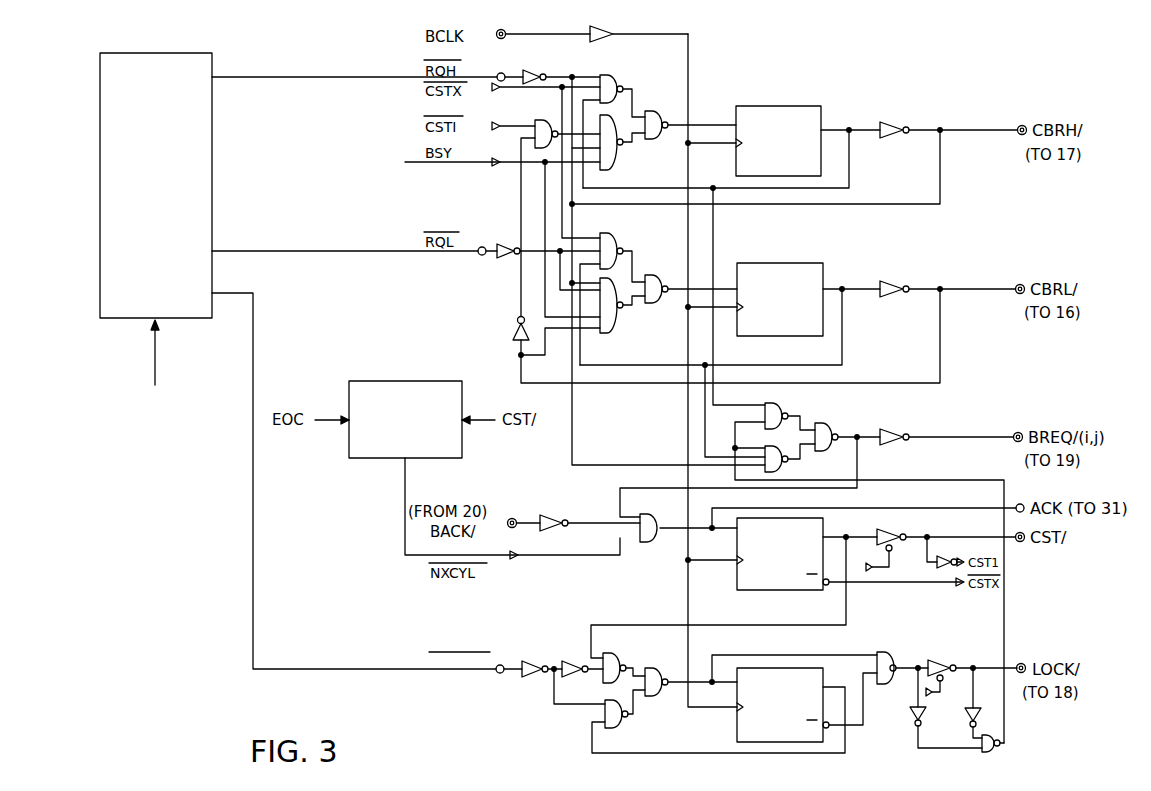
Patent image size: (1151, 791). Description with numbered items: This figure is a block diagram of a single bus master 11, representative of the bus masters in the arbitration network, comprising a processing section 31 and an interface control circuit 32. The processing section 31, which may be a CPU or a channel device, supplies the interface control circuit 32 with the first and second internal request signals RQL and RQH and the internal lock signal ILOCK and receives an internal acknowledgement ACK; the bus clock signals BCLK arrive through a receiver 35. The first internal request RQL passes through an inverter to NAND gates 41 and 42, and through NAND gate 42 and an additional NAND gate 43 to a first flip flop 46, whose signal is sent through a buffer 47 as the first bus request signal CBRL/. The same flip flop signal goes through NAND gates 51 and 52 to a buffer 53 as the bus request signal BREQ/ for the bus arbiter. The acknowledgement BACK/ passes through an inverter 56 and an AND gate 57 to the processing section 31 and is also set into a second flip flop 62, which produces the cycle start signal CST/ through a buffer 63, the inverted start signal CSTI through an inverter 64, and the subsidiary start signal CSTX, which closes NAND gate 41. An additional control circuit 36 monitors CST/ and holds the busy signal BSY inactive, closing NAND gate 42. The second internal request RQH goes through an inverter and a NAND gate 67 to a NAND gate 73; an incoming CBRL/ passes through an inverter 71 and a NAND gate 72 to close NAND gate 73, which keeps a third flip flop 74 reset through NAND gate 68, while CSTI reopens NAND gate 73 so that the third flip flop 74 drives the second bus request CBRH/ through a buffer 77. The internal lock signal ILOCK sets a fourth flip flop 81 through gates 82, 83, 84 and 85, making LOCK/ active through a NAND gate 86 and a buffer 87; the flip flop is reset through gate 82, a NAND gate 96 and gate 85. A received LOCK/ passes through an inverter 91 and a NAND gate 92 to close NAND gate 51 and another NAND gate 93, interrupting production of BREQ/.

The bus master 11 is at (168, 552).
The processing section 31 is at (100, 169).
The interface control circuit 32 is at (542, 716).
The receiver 35 is at (605, 27).
The additional control circuit 36 is at (372, 380).
The NAND gate 41 is at (615, 238).
The NAND gate 42 is at (618, 324).
The additional NAND gate 43 is at (655, 276).
The first flip flop 46 is at (774, 262).
The buffer 47 is at (896, 281).
The NAND gate 51 is at (780, 468).
The NAND gate 52 is at (826, 423).
The buffer 53 is at (899, 429).
The inverter 56 is at (549, 511).
The AND gate 57 is at (650, 514).
The second flip flop 62 is at (736, 588).
The buffer 63 is at (901, 532).
The inverter 64 is at (953, 558).
The NAND gate 67 is at (614, 77).
The NAND gate 68 is at (656, 111).
The inverter 71 is at (512, 327).
The NAND gate 72 is at (538, 121).
The NAND gate 73 is at (620, 160).
The third flip flop 74 is at (778, 105).
The buffer 77 is at (899, 121).
The fourth flip flop 81 is at (735, 731).
The gate 82 is at (530, 660).
The gate 83 is at (568, 660).
The gate 84 is at (614, 654).
The gate 85 is at (656, 668).
The NAND gate 86 is at (884, 652).
The buffer 87 is at (939, 660).
The inverter 91 is at (966, 714).
The NAND gate 92 is at (993, 752).
The NAND gate 93 is at (779, 410).
The NAND gate 96 is at (622, 724).